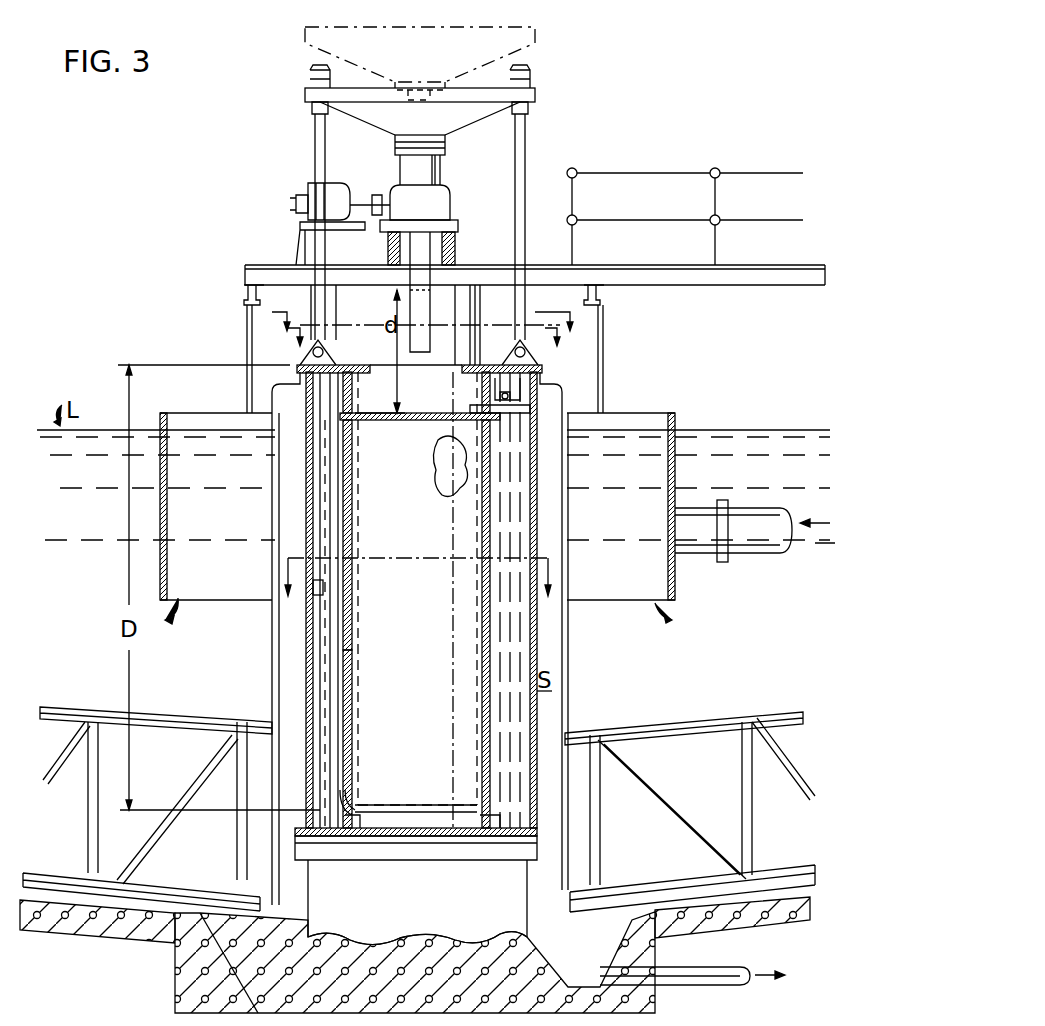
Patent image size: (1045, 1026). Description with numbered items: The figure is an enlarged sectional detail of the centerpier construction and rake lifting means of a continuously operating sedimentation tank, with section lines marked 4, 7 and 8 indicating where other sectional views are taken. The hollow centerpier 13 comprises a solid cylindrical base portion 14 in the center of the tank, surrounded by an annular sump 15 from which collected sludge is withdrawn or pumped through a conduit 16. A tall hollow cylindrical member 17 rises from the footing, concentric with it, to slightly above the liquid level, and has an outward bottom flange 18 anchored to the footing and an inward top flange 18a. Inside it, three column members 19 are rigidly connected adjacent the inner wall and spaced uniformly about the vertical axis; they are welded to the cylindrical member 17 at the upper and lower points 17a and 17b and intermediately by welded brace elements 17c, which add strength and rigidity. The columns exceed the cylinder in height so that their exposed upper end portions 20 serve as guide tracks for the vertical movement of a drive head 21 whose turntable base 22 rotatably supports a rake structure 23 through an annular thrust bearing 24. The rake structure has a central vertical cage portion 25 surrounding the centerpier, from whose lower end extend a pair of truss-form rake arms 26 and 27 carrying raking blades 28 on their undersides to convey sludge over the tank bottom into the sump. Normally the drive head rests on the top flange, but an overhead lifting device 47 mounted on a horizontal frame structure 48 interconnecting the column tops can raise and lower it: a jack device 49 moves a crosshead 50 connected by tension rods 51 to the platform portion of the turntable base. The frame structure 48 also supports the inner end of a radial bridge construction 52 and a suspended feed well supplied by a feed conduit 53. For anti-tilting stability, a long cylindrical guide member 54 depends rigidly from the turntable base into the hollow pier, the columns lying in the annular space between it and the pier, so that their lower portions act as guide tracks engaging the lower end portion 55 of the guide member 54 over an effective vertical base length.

The hollow centerpier 13 is at (305, 775).
The cylindrical base portion 14 is at (426, 906).
The annular sump 15 is at (274, 966).
The conduit 16 is at (700, 985).
The hollow cylindrical member 17 is at (305, 492).
The upper welding point 17a is at (305, 432).
The lower welding point 17b is at (342, 836).
The brace elements 17c is at (325, 590).
The outward bottom flange 18 is at (537, 836).
The inward top flange 18a is at (537, 440).
The column members 19 is at (330, 522).
The exposed upper end portions 20 is at (470, 290).
The drive head 21 is at (545, 368).
The turntable base 22 is at (482, 388).
The rake structure 23 is at (272, 692).
The annular thrust bearing 24 is at (538, 405).
The central vertical cage portion 25 is at (565, 540).
The rake arm 26 is at (212, 712).
The rake arm 27 is at (665, 715).
The raking blades 28 is at (165, 895).
The overhead lifting device 47 is at (388, 176).
The horizontal frame structure 48 is at (282, 265).
The jack device 49 is at (437, 216).
The crosshead 50 is at (437, 131).
The tension rods 51 is at (313, 148).
The bridge construction 52 is at (790, 278).
The feed conduit 53 is at (765, 555).
The cylindrical guide member 54 is at (352, 657).
The lower end portion 55 is at (350, 800).
The section line 4- 4 is at (419, 345).
The section line 7- 7 is at (421, 326).
The section line 8- 8 is at (417, 591).